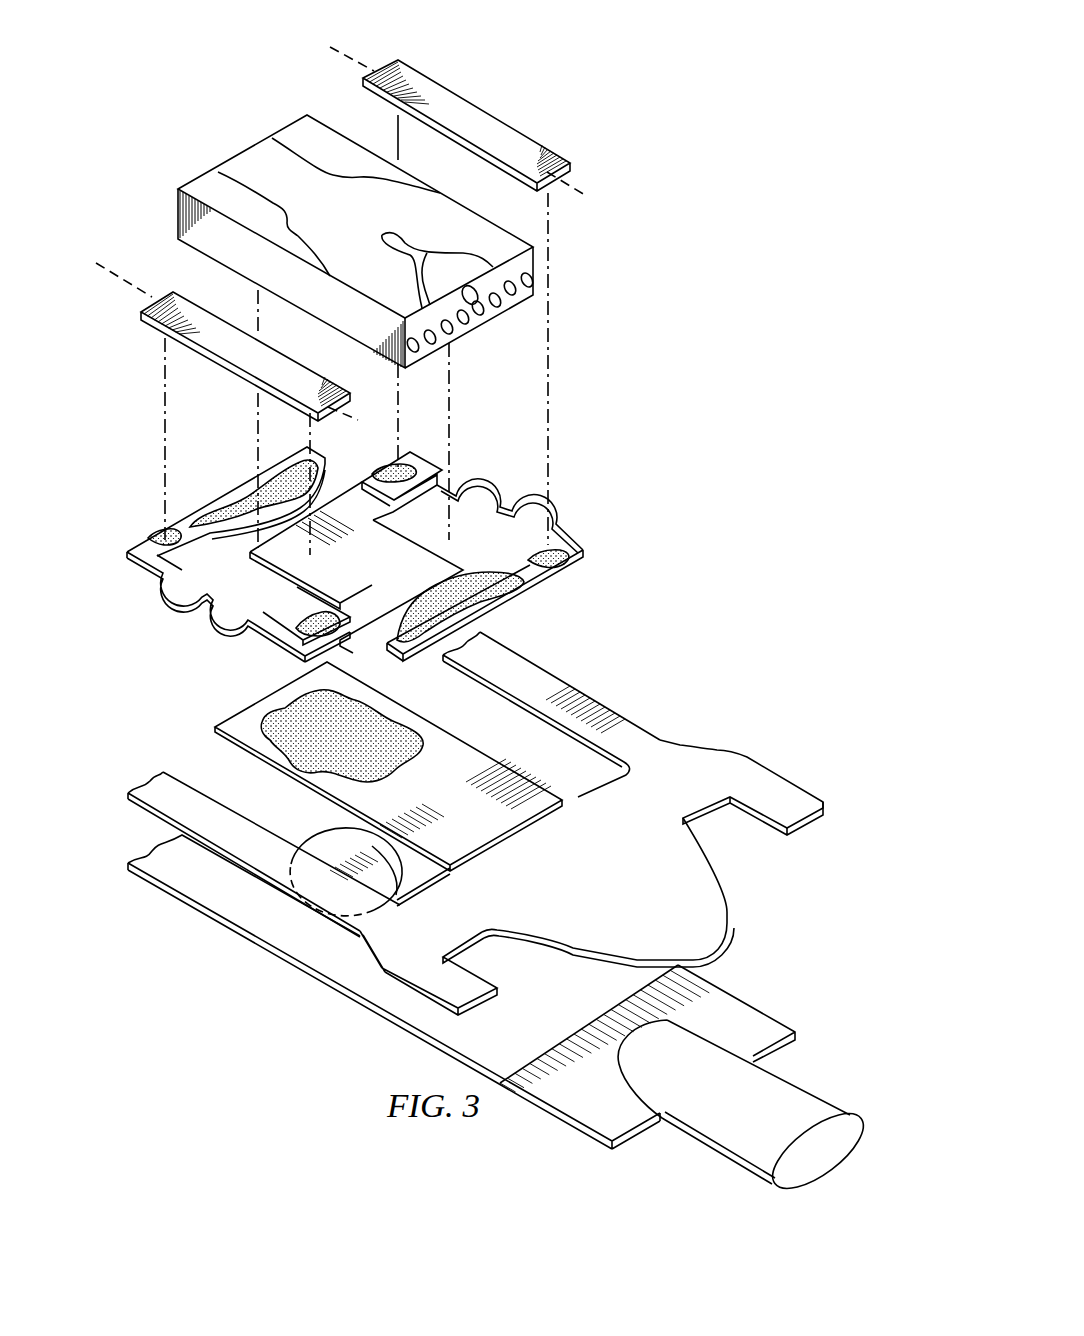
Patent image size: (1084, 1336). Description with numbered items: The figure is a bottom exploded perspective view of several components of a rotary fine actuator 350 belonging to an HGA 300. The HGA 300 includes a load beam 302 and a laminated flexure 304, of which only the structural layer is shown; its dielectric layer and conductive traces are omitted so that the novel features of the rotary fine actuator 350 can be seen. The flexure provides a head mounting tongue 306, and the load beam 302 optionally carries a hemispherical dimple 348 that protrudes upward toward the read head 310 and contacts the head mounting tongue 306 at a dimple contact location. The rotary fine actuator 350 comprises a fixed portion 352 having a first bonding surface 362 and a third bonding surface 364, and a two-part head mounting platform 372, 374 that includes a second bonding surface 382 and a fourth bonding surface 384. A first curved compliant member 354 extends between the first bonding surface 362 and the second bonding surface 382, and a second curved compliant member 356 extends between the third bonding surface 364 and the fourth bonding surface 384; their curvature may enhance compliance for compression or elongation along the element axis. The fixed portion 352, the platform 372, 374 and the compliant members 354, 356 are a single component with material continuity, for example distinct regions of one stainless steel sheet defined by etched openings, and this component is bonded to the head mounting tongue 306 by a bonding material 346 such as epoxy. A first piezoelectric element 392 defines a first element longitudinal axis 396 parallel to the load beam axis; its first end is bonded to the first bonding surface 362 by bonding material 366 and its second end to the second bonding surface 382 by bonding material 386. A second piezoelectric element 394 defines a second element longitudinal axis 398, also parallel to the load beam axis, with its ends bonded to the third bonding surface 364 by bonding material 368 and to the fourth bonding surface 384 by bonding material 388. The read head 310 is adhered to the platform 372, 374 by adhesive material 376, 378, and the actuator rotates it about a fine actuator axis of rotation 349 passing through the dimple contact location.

The HGA 300 is at (730, 118).
The load beam 302 is at (752, 1010).
The laminated flexure 304 is at (660, 740).
The head mounting tongue 306 is at (458, 748).
The read head 310 is at (253, 160).
The bonding material 346 is at (252, 758).
The dimple 348 is at (320, 840).
The fine actuator axis of rotation 349 is at (339, 647).
The rotary fine actuator 350 is at (730, 340).
The fixed portion 352 is at (353, 583).
The first curved compliant member 354 is at (212, 622).
The second curved compliant member 356 is at (484, 478).
The first bonding surface 362 is at (300, 648).
The third bonding surface 364 is at (408, 460).
The bonding material 366 is at (303, 618).
The bonding material 368 is at (378, 468).
The head mounting platform 372 is at (262, 488).
The head mounting platform 374 is at (470, 580).
The adhesive material 376 is at (225, 512).
The adhesive material 378 is at (505, 596).
The second bonding surface 382 is at (132, 560).
The fourth bonding surface 384 is at (566, 546).
The bonding material 386 is at (158, 536).
The bonding material 388 is at (566, 560).
The first piezoelectric element 392 is at (213, 328).
The second piezoelectric element 394 is at (498, 136).
The first element longitudinal axis 396 is at (110, 276).
The second element longitudinal axis 398 is at (580, 190).